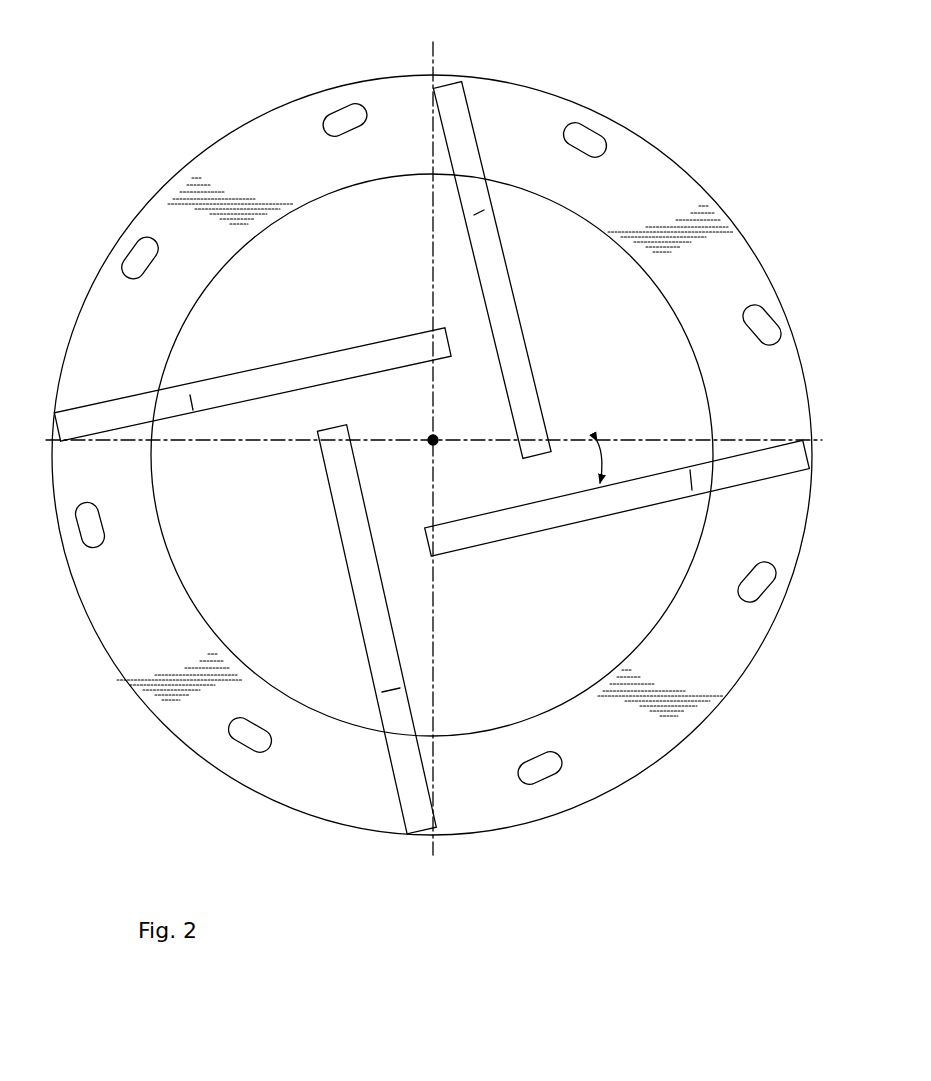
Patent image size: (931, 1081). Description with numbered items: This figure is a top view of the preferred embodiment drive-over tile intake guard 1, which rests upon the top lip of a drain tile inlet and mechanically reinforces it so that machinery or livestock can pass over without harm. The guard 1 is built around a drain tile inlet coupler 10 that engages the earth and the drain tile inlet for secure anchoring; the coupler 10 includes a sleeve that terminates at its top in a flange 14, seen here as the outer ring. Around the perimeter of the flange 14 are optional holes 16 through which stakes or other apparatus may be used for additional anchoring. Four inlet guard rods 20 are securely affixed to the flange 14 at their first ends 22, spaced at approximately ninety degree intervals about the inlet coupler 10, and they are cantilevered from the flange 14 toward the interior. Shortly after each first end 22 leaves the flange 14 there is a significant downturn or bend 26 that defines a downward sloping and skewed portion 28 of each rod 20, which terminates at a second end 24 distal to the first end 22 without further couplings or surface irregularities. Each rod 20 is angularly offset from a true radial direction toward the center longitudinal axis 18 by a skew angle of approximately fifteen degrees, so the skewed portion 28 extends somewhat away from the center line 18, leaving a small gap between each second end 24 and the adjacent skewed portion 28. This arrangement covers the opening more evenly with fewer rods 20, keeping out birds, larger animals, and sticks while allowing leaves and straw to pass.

The drive-over tile intake guard 1 is at (148, 60).
The drain tile inlet coupler 10 is at (606, 688).
The flange 14 is at (665, 198).
The optional holes 16 is at (598, 140).
The center longitudinal axis 18 is at (440, 440).
The inlet guard rods 20 is at (432, 88).
The first end 22 is at (470, 105).
The second end 24 is at (440, 326).
The bend 26 is at (380, 700).
The downward sloping and skewed portion 28 is at (365, 352).